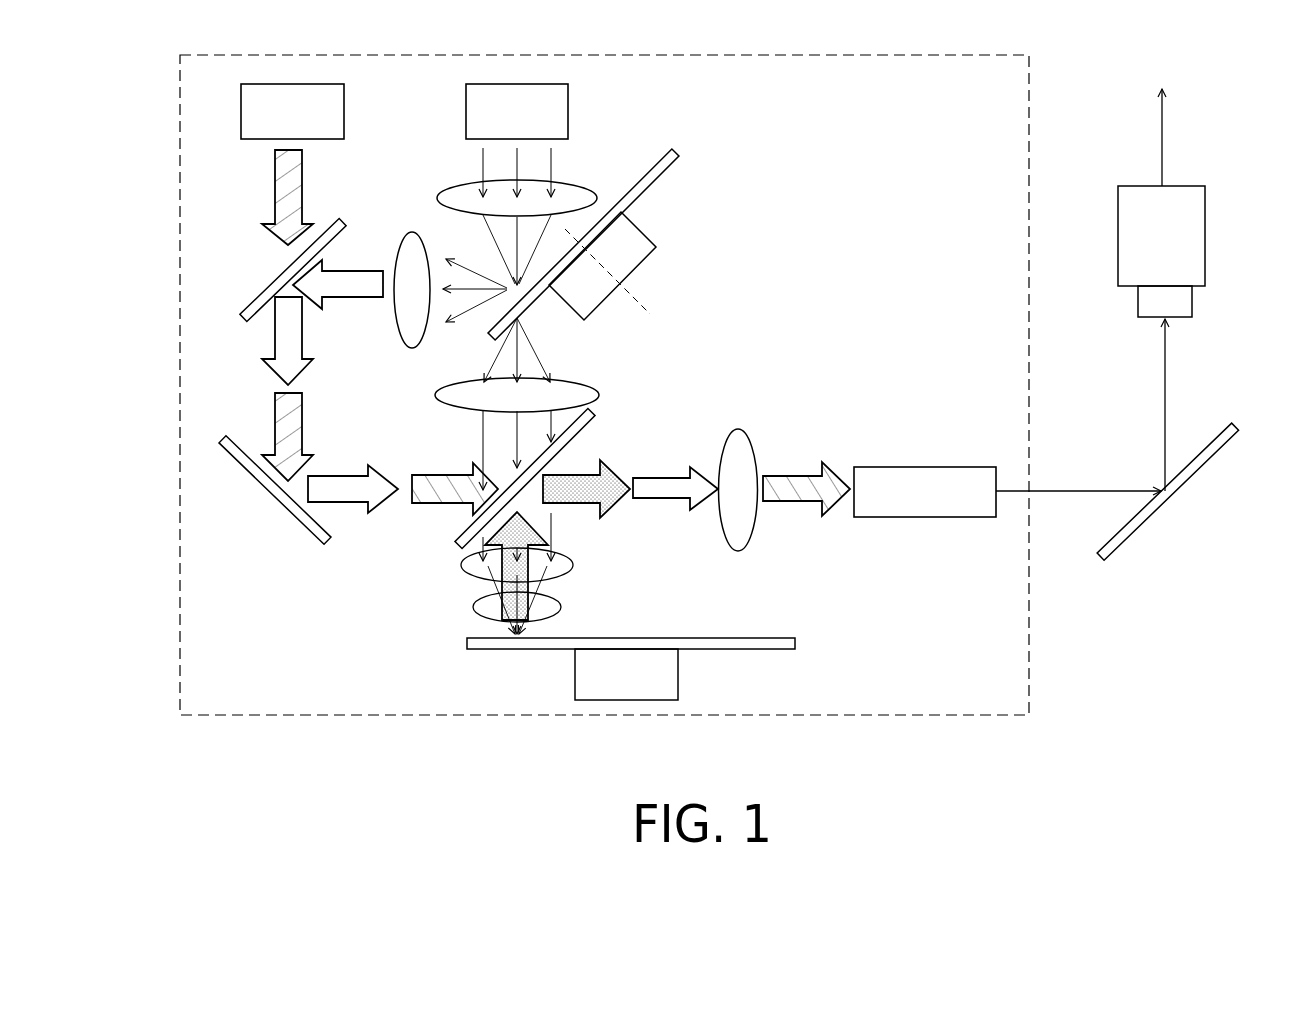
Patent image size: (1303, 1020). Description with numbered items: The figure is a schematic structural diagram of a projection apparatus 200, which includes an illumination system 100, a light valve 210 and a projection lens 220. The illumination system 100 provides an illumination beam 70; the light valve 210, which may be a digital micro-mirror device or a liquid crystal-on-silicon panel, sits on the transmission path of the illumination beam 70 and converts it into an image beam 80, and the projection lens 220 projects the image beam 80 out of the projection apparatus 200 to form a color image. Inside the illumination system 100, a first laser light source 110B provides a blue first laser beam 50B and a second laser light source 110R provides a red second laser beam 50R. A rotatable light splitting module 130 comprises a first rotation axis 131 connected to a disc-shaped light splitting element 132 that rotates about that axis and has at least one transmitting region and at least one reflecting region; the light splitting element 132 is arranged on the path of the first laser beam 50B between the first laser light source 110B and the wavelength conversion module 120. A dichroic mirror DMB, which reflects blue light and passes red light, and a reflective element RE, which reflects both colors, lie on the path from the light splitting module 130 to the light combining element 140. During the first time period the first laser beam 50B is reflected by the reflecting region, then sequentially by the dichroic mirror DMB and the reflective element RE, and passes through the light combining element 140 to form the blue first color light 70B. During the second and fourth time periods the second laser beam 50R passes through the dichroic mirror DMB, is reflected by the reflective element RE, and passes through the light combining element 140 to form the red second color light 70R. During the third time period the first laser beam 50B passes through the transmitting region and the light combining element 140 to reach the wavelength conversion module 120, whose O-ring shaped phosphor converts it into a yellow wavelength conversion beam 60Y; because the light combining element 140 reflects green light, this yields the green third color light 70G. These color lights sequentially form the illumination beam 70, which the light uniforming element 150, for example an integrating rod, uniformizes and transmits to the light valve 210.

The illumination system 100 is at (1030, 78).
The second laser light source 110R is at (337, 95).
The first laser light source 110B is at (562, 95).
The second laser beam 50R is at (276, 188).
The first laser beam 50B is at (552, 165).
The dichroic mirror DMB is at (278, 282).
The reflective element RE is at (283, 502).
The rotatable light splitting module 130 is at (651, 236).
The first rotation axis 131 is at (642, 292).
The light splitting element 132 is at (677, 152).
The light combining element 140 is at (597, 413).
The wavelength conversion beam 60Y is at (497, 565).
The third color light 70G is at (580, 503).
The first color light 70B is at (662, 478).
The second color light 70R is at (793, 472).
The wavelength conversion module 120 is at (797, 646).
The light uniforming element 150 is at (927, 465).
The illumination beam 70 is at (1082, 490).
The light valve 210 is at (1143, 540).
The image beam 80 is at (1167, 392).
The projection lens 220 is at (1206, 237).
The projection apparatus 200 is at (1240, 701).